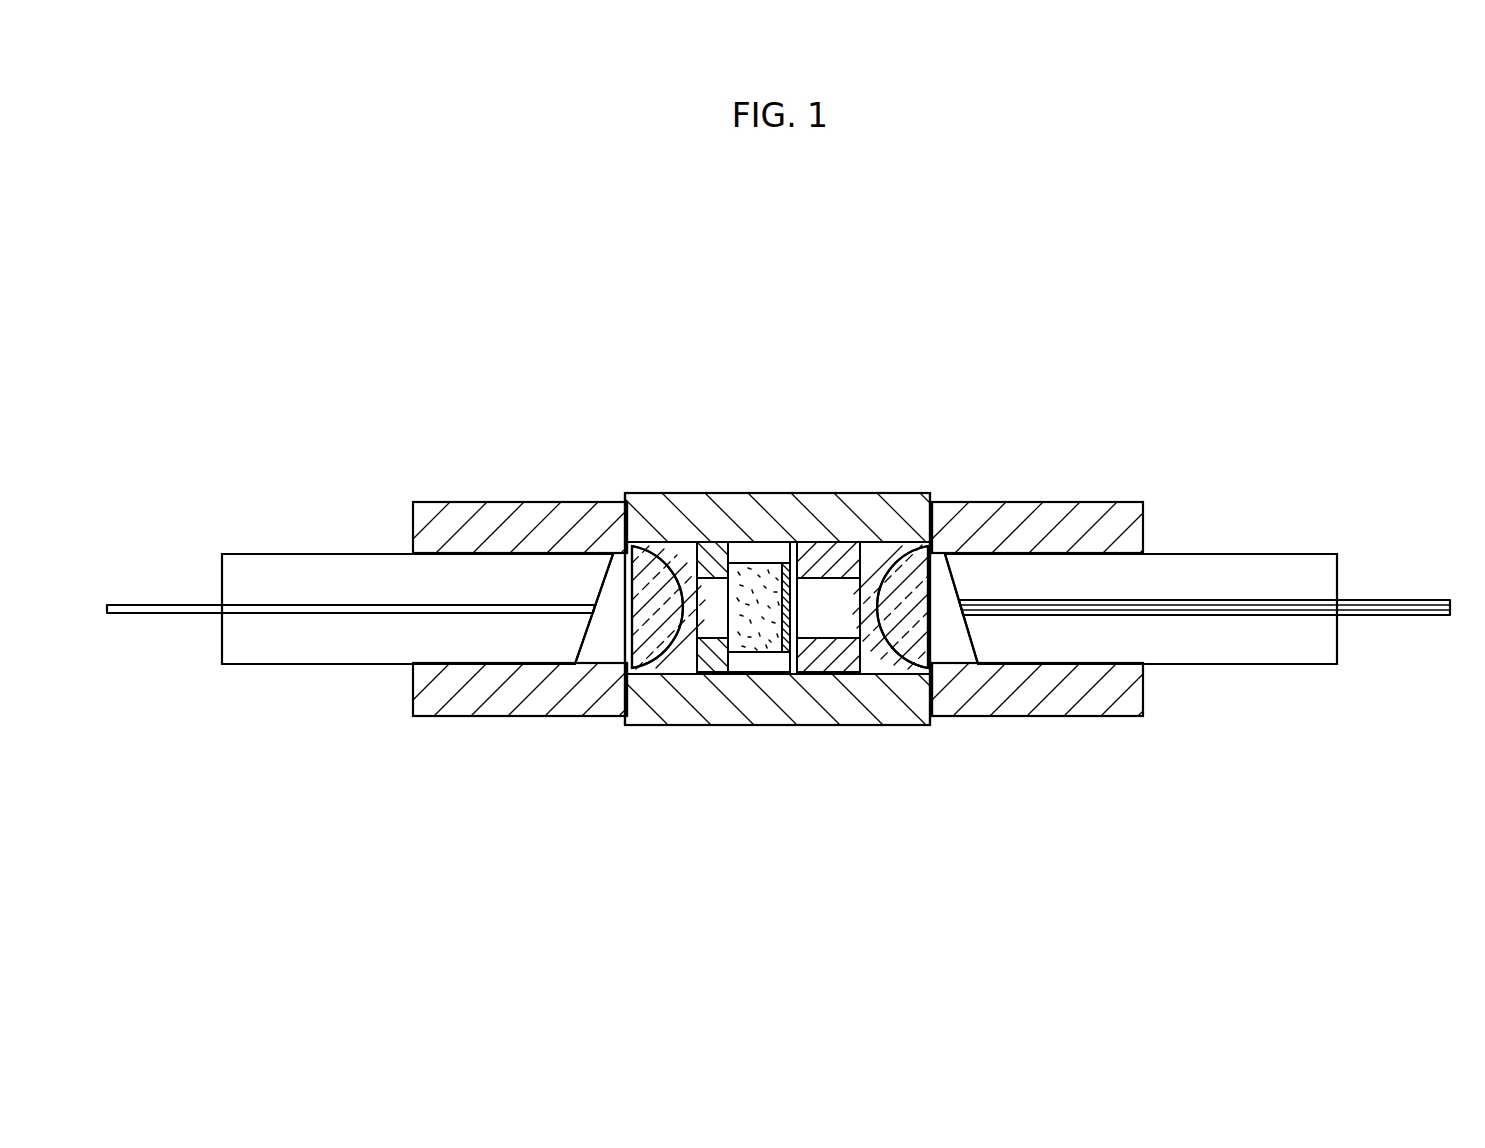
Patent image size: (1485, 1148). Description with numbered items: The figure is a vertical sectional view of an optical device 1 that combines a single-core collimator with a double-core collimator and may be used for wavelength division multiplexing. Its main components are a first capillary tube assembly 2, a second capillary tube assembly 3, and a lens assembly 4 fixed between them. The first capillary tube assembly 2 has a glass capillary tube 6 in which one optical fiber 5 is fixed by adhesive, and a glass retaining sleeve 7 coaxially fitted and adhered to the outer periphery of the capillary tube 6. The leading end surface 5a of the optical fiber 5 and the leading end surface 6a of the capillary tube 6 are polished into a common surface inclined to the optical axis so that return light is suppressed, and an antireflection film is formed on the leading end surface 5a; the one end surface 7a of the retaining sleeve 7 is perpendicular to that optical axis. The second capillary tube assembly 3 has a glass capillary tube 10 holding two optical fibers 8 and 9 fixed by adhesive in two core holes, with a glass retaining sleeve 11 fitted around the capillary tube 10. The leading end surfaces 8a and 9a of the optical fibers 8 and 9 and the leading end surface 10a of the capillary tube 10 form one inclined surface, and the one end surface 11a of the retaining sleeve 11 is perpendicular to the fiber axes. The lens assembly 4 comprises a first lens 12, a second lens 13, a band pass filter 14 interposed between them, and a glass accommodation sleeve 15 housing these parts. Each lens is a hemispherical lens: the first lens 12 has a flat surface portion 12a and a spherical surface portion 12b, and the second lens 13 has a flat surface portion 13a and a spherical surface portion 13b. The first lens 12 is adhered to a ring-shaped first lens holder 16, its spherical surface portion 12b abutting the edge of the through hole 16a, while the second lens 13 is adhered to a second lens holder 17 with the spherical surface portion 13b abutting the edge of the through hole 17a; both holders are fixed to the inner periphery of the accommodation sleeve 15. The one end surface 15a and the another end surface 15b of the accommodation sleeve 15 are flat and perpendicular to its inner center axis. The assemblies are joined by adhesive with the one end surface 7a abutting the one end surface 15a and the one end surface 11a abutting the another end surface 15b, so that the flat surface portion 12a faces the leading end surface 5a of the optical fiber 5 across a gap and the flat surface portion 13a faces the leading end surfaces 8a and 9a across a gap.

The optical device 1 is at (1044, 379).
The first capillary tube assembly 2 is at (427, 494).
The second capillary tube assembly 3 is at (1131, 494).
The lens assembly 4 is at (888, 396).
The optical fiber 5 is at (150, 603).
The leading end surface of the optical fiber 5a is at (600, 610).
The capillary tube 6 is at (312, 553).
The leading end surface of the capillary tube 6a is at (602, 580).
The retaining sleeve 7 is at (481, 502).
The one end surface of the retaining sleeve 7a is at (636, 518).
The optical fiber 8 is at (1392, 598).
The leading end surface of the optical fiber 8a is at (962, 612).
The optical fiber 9 is at (1393, 618).
The leading end surface of the optical fiber 9a is at (962, 628).
The capillary tube 10 is at (1251, 553).
The leading end surface of the capillary tube 10a is at (963, 578).
The retaining sleeve 11 is at (1076, 512).
The one end surface of the retaining sleeve 11a is at (916, 528).
The first lens 12 is at (667, 575).
The flat surface portion 12a is at (632, 645).
The spherical surface portion 12b is at (672, 655).
The second lens 13 is at (887, 575).
The flat surface portion 13a is at (934, 650).
The spherical surface portion 13b is at (853, 630).
The band pass filter 14 is at (749, 566).
The accommodation sleeve 15 is at (788, 503).
The one end surface of the accommodation sleeve 15a is at (622, 510).
The another end surface of the accommodation sleeve 15b is at (935, 520).
The first lens holder 16 is at (712, 548).
The through hole 16a is at (733, 636).
The second lens holder 17 is at (839, 552).
The through hole 17a is at (826, 635).